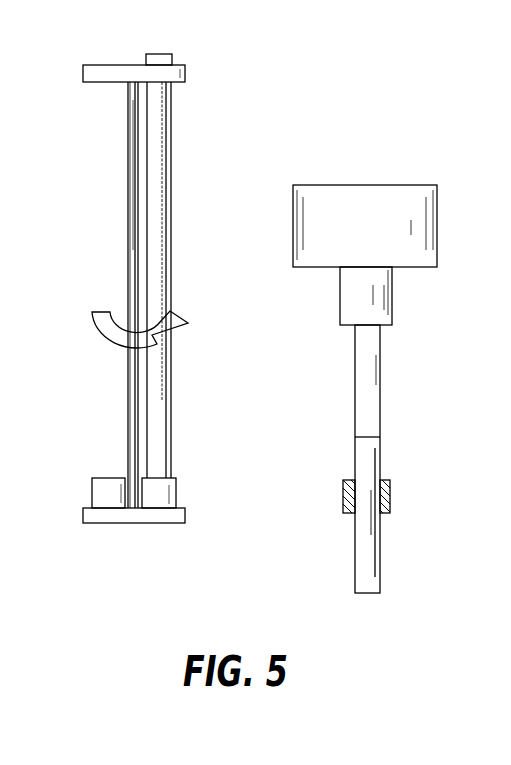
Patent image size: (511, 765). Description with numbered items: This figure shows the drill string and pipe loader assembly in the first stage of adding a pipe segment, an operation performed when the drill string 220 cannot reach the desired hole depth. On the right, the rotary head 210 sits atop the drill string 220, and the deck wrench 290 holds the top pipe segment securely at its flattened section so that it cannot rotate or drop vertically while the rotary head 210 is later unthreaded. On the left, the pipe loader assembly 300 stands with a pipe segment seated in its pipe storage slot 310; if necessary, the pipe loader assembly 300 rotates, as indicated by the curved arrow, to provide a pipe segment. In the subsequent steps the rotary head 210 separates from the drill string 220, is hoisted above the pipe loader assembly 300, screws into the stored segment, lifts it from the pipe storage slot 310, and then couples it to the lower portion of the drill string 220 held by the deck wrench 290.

The pipe loader assembly 300 is at (114, 279).
The pipe storage slot 310 is at (102, 497).
The drill string 220 is at (441, 411).
The rotary head 210 is at (365, 395).
The deck wrench 290 is at (391, 497).